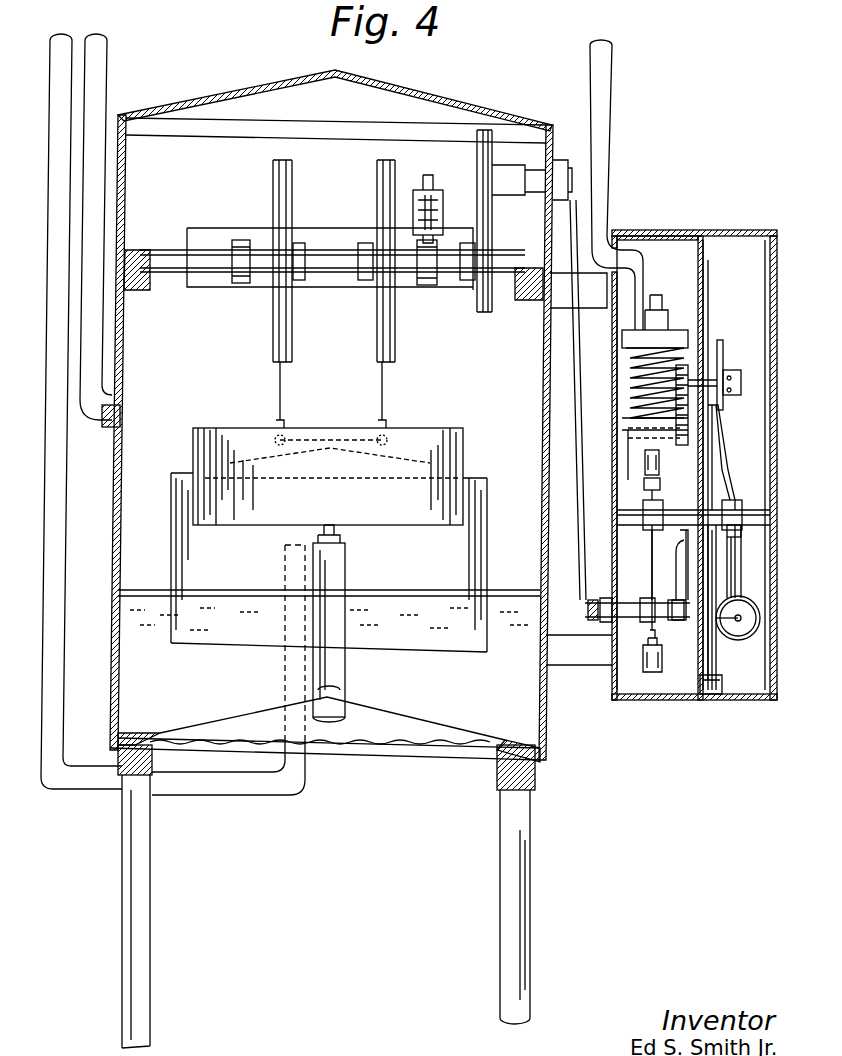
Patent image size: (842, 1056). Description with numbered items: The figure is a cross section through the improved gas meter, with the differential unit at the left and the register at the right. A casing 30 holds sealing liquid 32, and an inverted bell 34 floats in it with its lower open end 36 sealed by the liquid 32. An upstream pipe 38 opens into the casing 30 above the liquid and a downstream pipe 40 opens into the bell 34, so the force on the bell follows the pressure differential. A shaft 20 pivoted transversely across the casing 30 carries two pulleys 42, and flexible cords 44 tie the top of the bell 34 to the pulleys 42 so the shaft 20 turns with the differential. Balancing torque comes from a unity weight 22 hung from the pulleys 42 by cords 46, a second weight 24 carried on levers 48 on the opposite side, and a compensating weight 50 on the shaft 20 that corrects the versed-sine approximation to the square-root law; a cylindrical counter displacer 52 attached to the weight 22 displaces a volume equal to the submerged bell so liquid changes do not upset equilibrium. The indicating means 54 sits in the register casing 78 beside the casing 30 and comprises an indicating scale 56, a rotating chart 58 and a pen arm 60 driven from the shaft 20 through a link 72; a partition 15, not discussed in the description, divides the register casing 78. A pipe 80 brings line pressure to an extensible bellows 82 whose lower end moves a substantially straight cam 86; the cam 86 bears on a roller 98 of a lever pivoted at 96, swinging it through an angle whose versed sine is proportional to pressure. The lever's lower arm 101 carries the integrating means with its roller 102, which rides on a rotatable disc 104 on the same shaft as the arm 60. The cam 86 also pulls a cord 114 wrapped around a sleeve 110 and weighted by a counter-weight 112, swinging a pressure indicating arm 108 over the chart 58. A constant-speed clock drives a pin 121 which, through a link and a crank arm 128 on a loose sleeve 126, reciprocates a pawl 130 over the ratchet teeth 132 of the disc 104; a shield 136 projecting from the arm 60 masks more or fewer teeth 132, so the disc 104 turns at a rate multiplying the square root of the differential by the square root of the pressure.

The partition 15 is at (701, 229).
The shaft 20 is at (167, 247).
The weight 22 is at (202, 426).
The second weight 24 is at (205, 229).
The casing 30 is at (412, 92).
The sealing liquid 32 is at (112, 692).
The inverted bell 34 is at (172, 481).
The lower open end 36 is at (212, 649).
The upstream pipe 38 is at (106, 420).
The downstream pipe 40 is at (66, 468).
The pulleys 42 is at (376, 170).
The flexible cords 44 is at (332, 456).
The cords 46 is at (381, 401).
The levers 48 is at (241, 287).
The compensating weight 50 is at (458, 178).
The counter displacer 52 is at (345, 565).
The indicating means 54 is at (728, 265).
The indicating scale 56 is at (720, 340).
The rotating chart recorder 58 is at (708, 300).
The arm 60 is at (728, 432).
The link 72 is at (584, 476).
The register casing 78 is at (642, 231).
The pipe 80 is at (608, 102).
The extensible bellows 82 is at (624, 350).
The cam 86 is at (645, 470).
The pivot 96 is at (643, 532).
The roller 98 is at (644, 486).
The lower arm 101 is at (727, 577).
The actuating roller 102 is at (760, 600).
The rotatable disc 104 is at (718, 652).
The indicating arm 108 is at (722, 458).
The sleeve 110 is at (632, 618).
The counter-weight 112 is at (652, 672).
The cord 114 is at (650, 570).
The pin 121 is at (687, 409).
The sleeve 126 is at (676, 622).
The crank arm 128 is at (690, 562).
The pawl 130 is at (735, 537).
The ratchet teeth 132 is at (717, 664).
The shield 136 is at (735, 552).